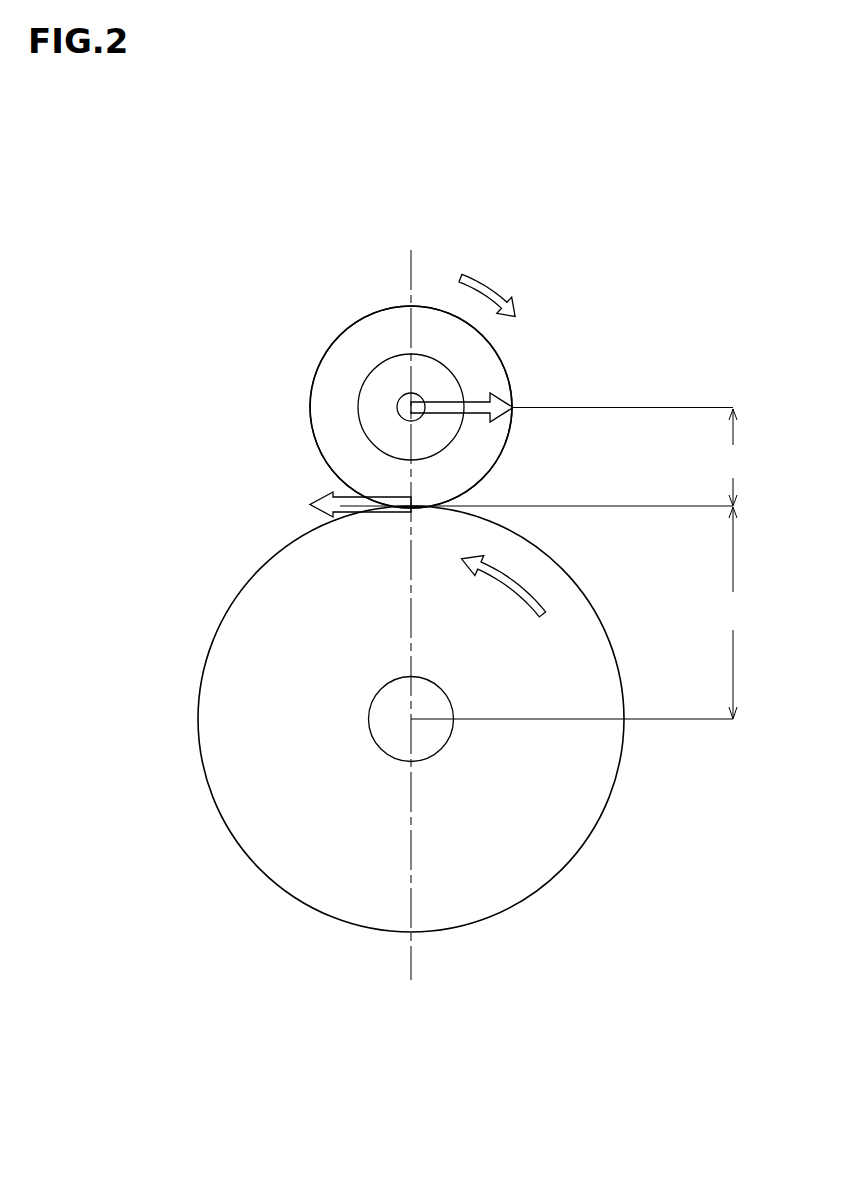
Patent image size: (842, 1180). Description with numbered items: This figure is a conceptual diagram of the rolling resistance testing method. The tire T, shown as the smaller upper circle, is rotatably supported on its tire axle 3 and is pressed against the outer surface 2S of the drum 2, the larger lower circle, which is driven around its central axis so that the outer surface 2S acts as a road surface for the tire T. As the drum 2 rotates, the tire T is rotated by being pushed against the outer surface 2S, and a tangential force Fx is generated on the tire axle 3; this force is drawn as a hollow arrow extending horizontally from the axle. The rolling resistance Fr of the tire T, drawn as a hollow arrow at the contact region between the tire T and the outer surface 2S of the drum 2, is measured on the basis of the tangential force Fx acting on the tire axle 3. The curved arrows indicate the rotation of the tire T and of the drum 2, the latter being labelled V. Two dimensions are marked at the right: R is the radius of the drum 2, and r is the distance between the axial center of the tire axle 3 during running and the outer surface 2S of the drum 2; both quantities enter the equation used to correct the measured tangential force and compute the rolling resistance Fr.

The drum 2 is at (346, 719).
The outer surface of the drum 2S is at (218, 623).
The tire axle 3 is at (400, 397).
The tire T is at (325, 400).
The tangential force Fx is at (475, 400).
The rolling resistance Fr is at (343, 493).
The rotation direction V is at (520, 575).
The distance between axial center of tire axle and outer surface of drum r is at (732, 457).
The radius of the drum R is at (732, 613).